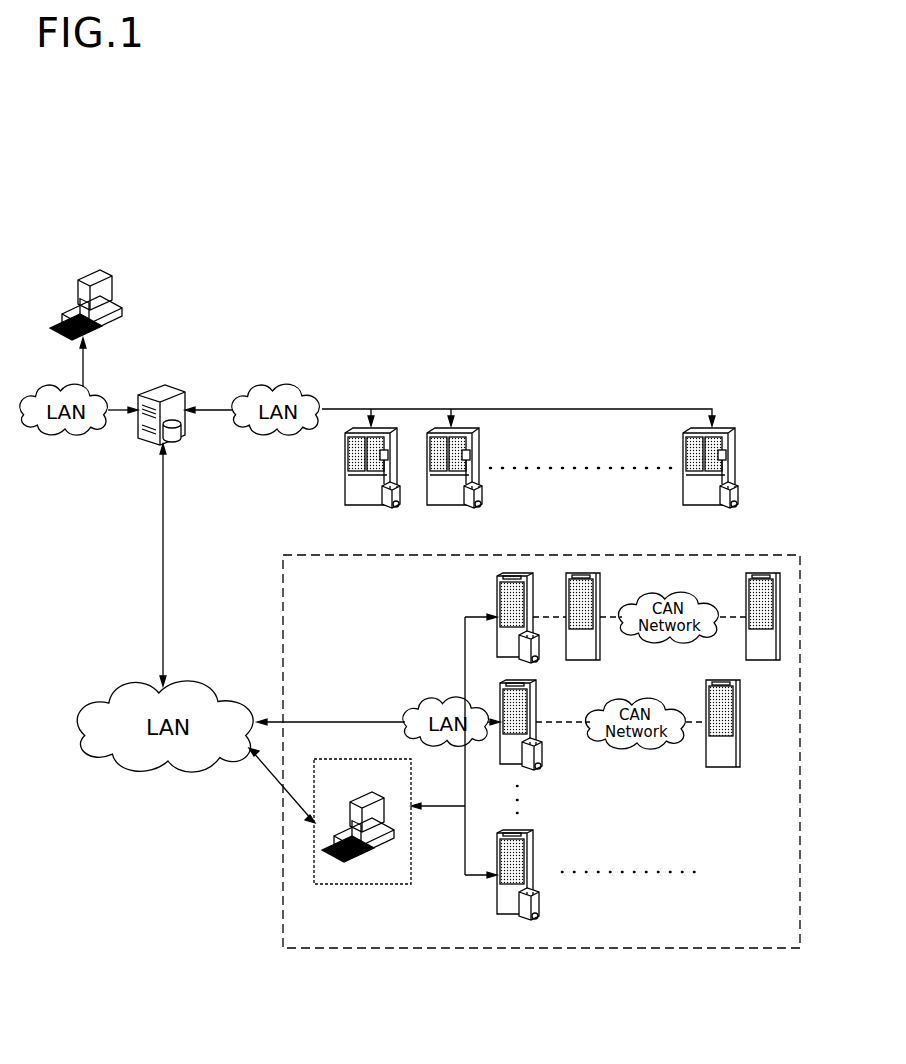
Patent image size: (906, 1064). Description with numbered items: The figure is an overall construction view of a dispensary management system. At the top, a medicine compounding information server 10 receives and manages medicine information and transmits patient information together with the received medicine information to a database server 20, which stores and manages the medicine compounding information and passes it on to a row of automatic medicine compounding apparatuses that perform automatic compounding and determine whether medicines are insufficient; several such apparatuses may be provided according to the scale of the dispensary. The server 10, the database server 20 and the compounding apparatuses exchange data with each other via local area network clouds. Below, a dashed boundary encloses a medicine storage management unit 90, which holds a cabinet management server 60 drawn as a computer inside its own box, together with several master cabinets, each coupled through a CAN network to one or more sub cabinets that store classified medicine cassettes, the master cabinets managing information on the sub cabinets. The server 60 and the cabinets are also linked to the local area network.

The medicine compounding information server 10 is at (112, 318).
The database server 20 is at (183, 420).
The cabinet management server 60 is at (313, 870).
The medicine storage management unit 90 is at (555, 949).